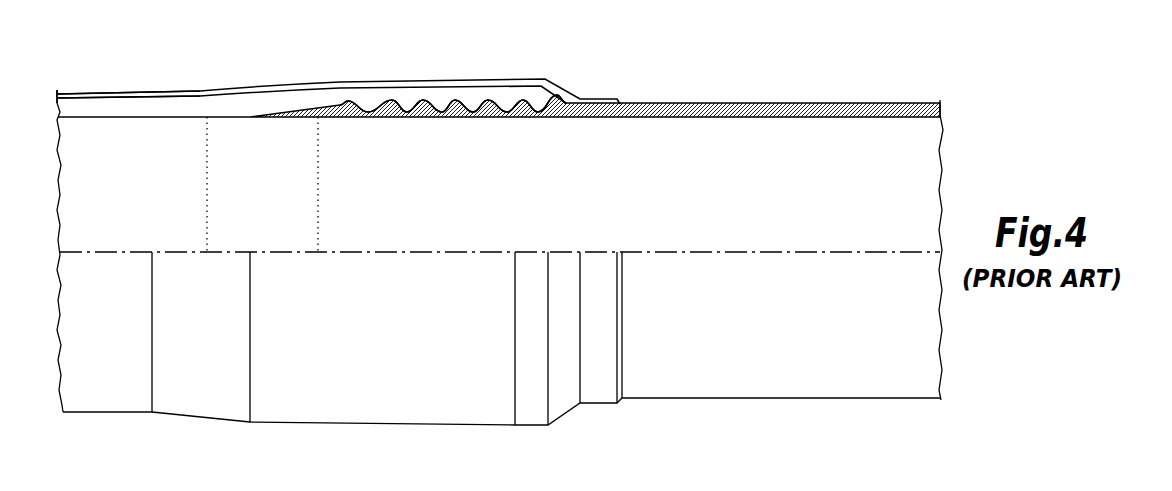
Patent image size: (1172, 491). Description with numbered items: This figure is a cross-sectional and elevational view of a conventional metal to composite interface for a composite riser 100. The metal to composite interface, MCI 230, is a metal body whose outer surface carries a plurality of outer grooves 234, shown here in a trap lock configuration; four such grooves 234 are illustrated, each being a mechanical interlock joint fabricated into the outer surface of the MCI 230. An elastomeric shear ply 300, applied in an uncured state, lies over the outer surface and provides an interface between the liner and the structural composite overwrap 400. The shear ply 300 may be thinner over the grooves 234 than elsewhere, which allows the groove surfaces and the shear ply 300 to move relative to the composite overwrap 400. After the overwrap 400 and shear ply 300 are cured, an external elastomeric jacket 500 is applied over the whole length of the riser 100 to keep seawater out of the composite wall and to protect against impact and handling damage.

The composite riser 100 is at (617, 49).
The metal to composite interface (MCI) 230 is at (403, 229).
The outer grooves 234 is at (470, 101).
The elastomeric shear ply 300 is at (258, 113).
The structural composite overwrap 400 is at (83, 103).
The external jacket 500 is at (533, 78).